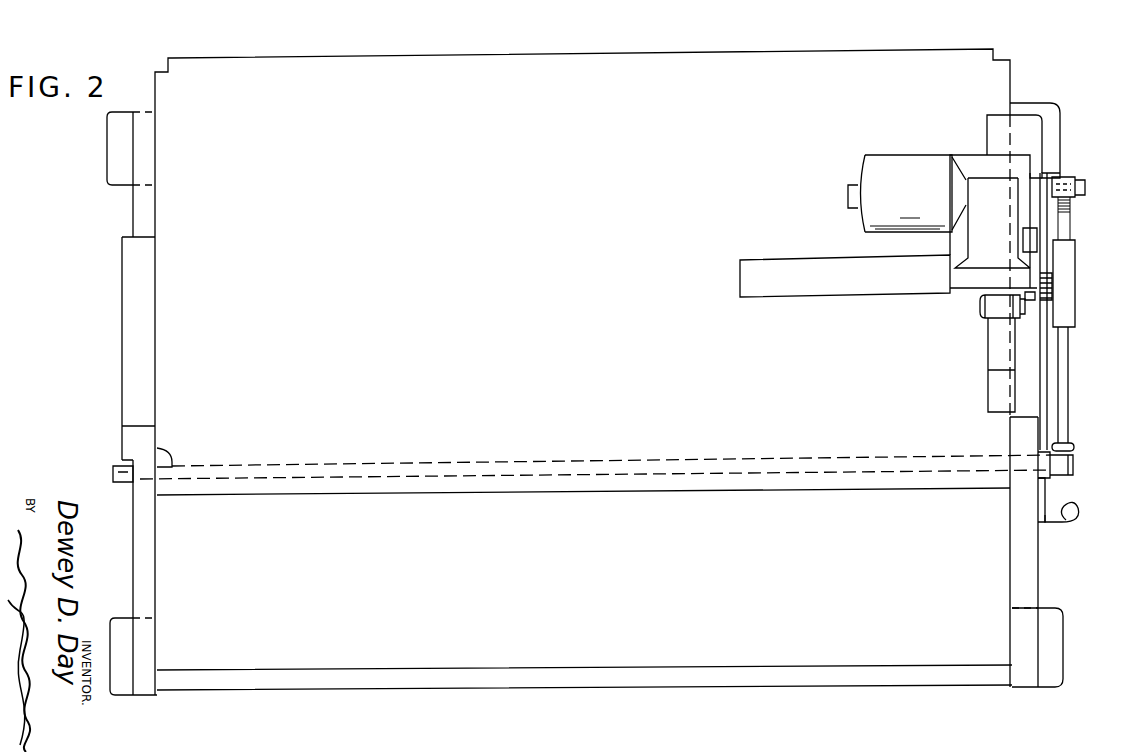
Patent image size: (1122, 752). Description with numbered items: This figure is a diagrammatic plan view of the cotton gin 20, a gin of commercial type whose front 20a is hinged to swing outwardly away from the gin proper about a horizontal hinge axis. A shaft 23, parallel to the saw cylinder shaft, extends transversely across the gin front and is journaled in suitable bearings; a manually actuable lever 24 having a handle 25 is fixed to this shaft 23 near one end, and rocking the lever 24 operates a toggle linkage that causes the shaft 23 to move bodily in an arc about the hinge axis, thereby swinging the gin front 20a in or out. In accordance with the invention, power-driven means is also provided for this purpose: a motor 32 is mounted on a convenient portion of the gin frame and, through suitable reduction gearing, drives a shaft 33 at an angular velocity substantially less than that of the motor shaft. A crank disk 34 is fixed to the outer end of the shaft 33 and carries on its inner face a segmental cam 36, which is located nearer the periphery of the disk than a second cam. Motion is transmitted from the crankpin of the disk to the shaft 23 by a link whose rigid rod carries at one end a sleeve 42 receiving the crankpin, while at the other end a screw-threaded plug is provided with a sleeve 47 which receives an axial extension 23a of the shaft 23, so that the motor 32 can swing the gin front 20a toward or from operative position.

The cotton gin 20 is at (927, 60).
The gin front 20a is at (963, 655).
The shaft 23 is at (442, 472).
The axial extension of the shaft 23a is at (1088, 448).
The manually actuable lever 24 is at (1040, 505).
The handle 25 is at (1071, 527).
The motor 32 is at (890, 170).
The shaft 33 is at (1023, 240).
The crank disk 34 is at (1043, 270).
The segmental cam 36 is at (1040, 170).
The sleeve 42 is at (1063, 185).
The sleeve 47 is at (1058, 478).